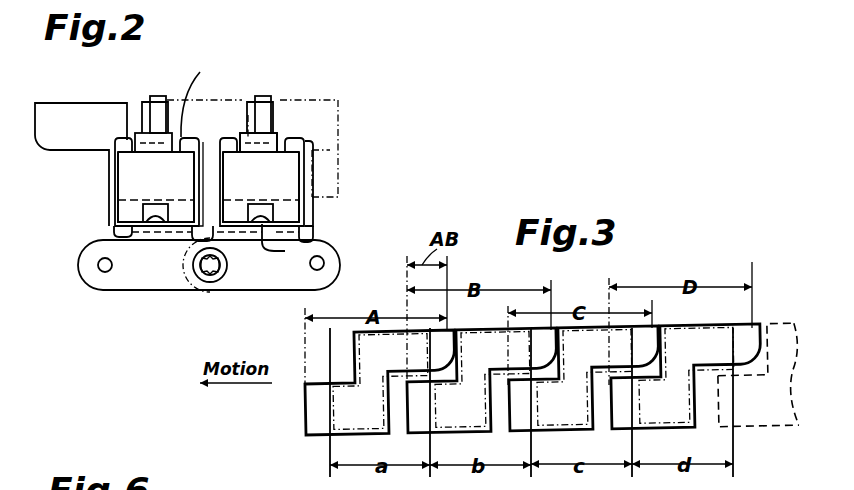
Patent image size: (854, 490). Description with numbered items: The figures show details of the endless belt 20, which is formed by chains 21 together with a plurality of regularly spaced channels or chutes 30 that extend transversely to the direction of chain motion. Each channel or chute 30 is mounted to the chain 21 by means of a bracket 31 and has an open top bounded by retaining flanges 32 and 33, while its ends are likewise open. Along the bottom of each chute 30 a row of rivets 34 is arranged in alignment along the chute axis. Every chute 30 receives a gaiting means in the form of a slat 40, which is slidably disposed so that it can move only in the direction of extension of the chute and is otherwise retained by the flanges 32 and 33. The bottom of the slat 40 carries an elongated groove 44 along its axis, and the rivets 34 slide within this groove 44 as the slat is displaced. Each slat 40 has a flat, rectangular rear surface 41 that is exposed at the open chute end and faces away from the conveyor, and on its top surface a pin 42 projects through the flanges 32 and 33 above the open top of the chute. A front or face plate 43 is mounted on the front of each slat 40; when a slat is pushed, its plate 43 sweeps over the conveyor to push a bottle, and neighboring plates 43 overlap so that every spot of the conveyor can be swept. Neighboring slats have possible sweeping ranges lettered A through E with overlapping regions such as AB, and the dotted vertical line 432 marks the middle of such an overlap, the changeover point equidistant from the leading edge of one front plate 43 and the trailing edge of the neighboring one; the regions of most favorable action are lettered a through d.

In FIG. 2, the endless belt 20 is at (92, 207).
In FIG. 2, the chain 21 is at (163, 280).
In FIG. 2, the channel or chute 30 is at (281, 180).
In FIG. 2, the bracket 31 is at (297, 231).
In FIG. 2, the retaining flange 32 is at (104, 138).
In FIG. 2, the retaining flange 33 is at (193, 98).
In FIG. 2, the rivet 34 is at (285, 251).
In FIG. 2, the slat 40 is at (168, 172).
In FIG. 2, the rear surface 41 is at (140, 172).
In FIG. 2, the pin 42 is at (158, 110).
In FIG. 2, the front or face plate 43 is at (112, 103).
In FIG. 2, the elongated groove 44 is at (300, 224).
In FIG. 3, the dotted vertical line 432 is at (427, 343).